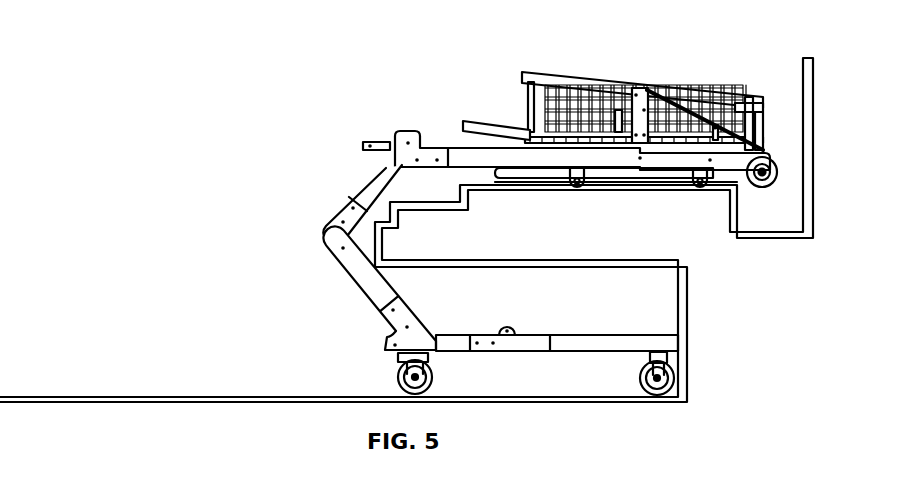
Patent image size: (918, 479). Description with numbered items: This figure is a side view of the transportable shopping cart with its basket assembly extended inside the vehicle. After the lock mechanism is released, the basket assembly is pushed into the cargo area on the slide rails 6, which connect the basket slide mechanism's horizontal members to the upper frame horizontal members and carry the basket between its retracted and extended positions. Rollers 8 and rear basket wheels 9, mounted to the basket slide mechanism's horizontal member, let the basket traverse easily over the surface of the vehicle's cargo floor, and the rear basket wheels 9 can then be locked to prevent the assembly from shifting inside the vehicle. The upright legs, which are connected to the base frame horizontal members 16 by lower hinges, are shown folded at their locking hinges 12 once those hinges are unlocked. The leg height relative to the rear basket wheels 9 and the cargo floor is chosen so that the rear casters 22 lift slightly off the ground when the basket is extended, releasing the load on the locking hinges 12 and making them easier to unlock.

The slide rails 6 is at (477, 148).
The rollers 8 is at (707, 185).
The rear basket wheels 9 is at (495, 172).
The locking hinges 12 is at (322, 231).
The base frame horizontal members 16 is at (645, 340).
The rear casters 22 is at (400, 374).